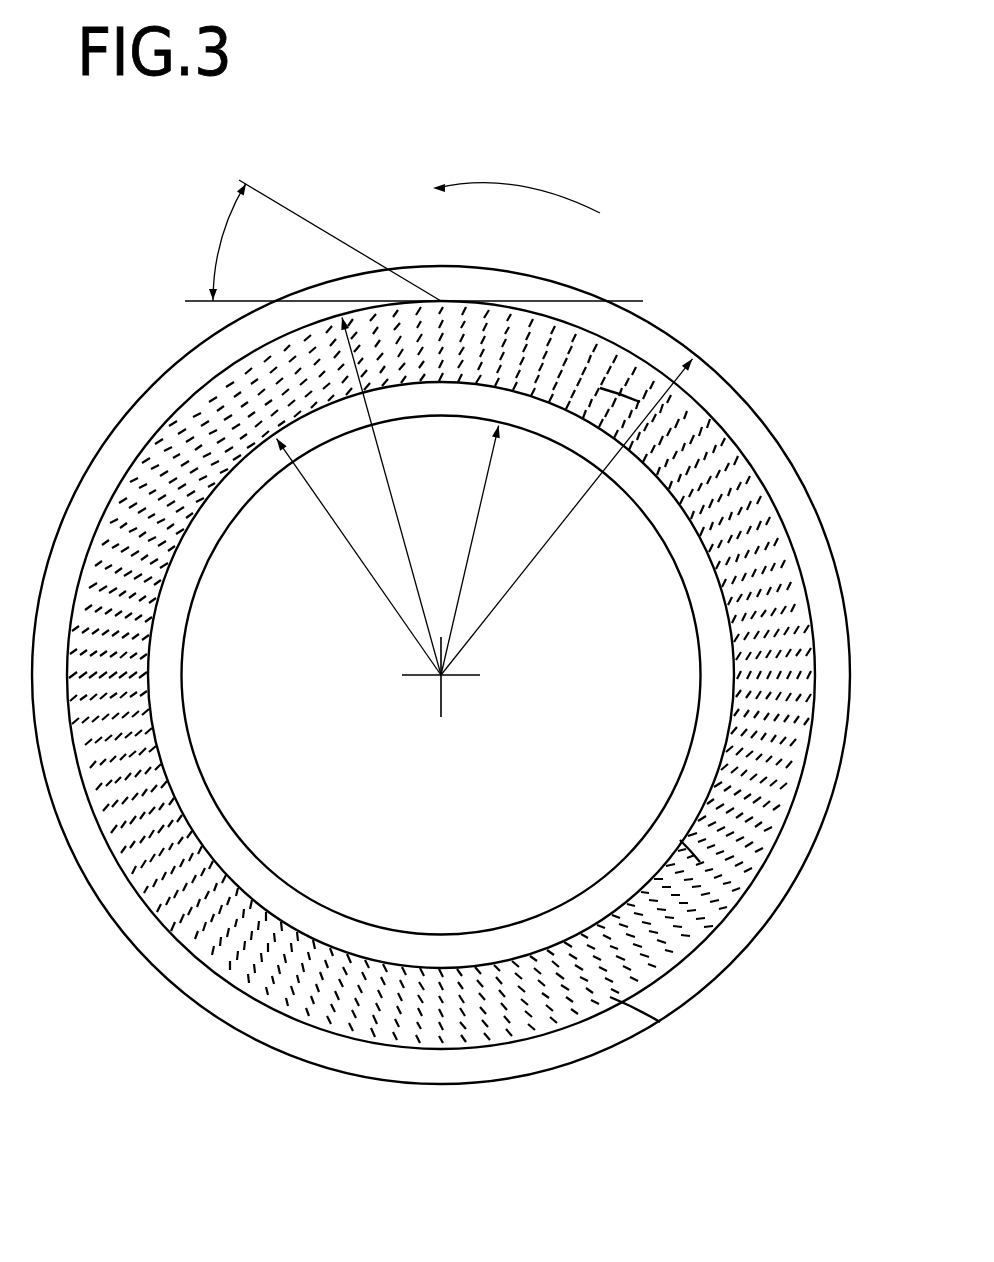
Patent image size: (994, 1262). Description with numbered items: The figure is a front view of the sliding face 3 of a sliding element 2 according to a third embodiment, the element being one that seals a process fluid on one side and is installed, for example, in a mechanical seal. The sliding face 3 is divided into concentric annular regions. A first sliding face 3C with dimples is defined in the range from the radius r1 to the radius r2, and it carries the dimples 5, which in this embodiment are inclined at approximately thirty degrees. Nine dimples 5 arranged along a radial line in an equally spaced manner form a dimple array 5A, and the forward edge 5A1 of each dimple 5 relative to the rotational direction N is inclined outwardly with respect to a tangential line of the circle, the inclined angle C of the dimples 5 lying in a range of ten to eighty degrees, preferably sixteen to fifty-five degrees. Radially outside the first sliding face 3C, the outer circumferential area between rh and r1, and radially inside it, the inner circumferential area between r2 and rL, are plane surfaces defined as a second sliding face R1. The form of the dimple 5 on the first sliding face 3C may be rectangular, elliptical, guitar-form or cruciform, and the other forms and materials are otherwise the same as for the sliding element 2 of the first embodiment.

The sliding element 2 is at (717, 372).
The sliding face 3 is at (520, 318).
The first sliding face with dimples 3C is at (622, 388).
The dimple 5 is at (790, 563).
The dimple array 5A is at (715, 895).
The forward edge 5A1 is at (655, 960).
The second sliding face R1 is at (100, 472).
The radius r1 is at (391, 497).
The radius r2 is at (359, 557).
The radius rL is at (470, 550).
The radius rh is at (567, 517).
The inclined angle C is at (414, 240).
The rotational direction N is at (504, 194).